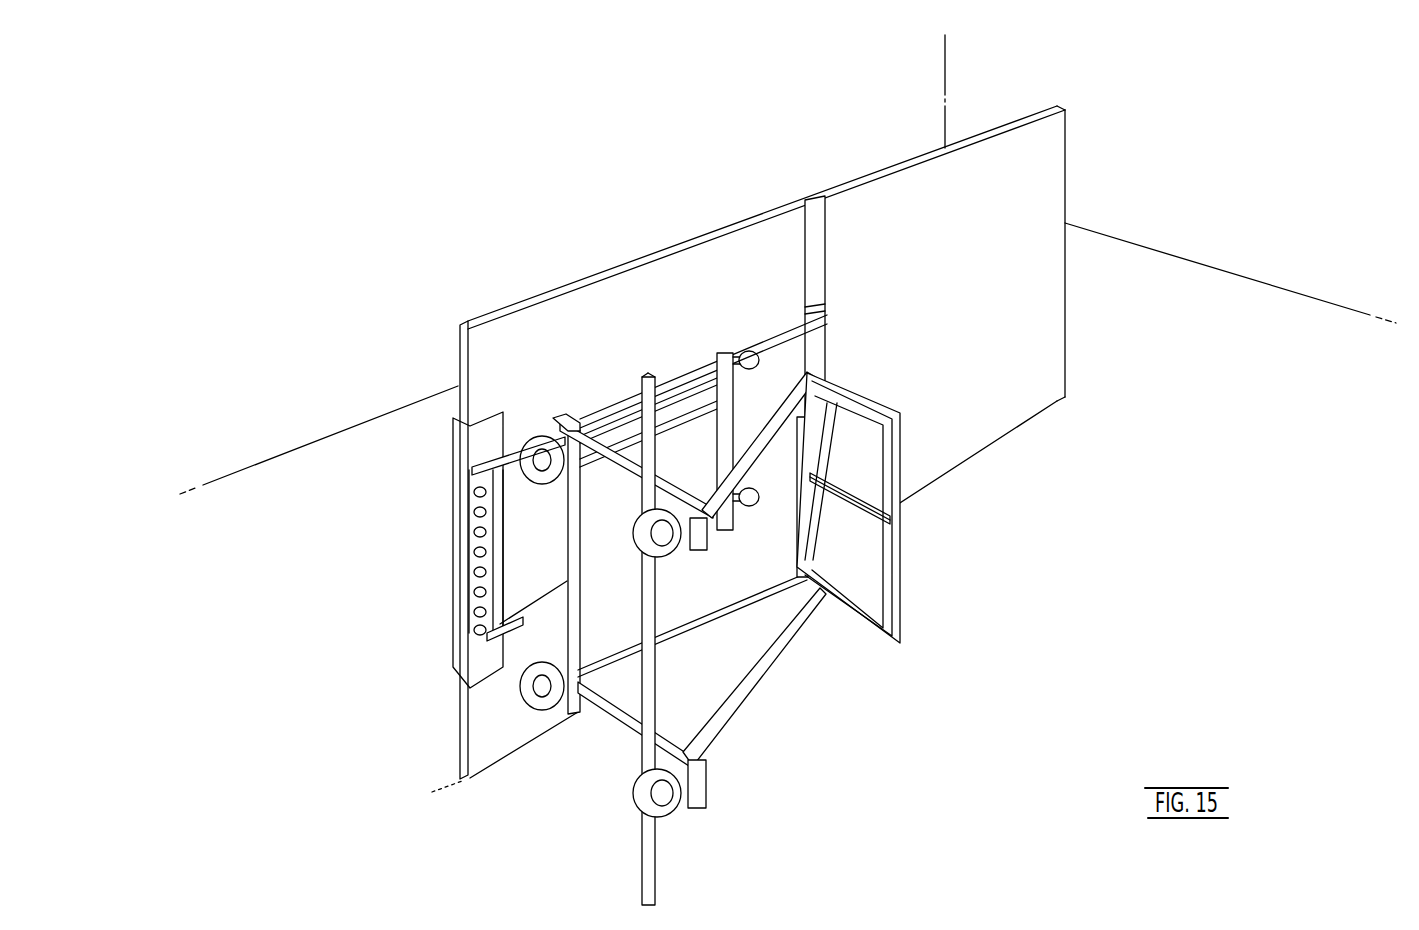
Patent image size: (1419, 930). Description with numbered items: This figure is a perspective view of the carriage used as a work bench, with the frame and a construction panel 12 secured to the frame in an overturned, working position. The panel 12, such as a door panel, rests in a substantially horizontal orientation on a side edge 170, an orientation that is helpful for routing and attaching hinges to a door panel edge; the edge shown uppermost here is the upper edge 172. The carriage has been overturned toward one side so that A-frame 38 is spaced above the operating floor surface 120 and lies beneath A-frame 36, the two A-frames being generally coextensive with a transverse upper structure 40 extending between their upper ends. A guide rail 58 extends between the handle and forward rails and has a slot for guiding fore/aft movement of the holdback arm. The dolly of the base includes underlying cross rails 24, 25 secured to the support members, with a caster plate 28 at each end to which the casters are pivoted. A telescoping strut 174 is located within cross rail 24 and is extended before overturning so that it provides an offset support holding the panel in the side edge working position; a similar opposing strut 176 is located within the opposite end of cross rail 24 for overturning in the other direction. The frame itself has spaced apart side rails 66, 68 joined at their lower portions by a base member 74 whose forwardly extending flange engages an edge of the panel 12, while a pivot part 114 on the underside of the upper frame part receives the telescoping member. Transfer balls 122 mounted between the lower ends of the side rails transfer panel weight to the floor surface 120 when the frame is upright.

The construction panel 12 is at (1003, 255).
The cross rail 24 is at (641, 775).
The cross rail 25 is at (573, 714).
The caster plate 28 is at (690, 551).
The A-frame 36 is at (680, 427).
The A-frame 38 is at (735, 673).
The transverse upper structure 40 is at (919, 518).
The guide rail 58 is at (850, 520).
The side rail 66 is at (728, 352).
The side rail 68 is at (715, 507).
The base member 74 is at (450, 648).
The pivot part 114 is at (717, 440).
The floor surface 120 is at (433, 571).
The transfer balls 122 is at (473, 500).
The side edge 170 is at (922, 492).
The upper edge 172 is at (927, 152).
The telescoping strut 174 is at (656, 888).
The opposing strut 176 is at (640, 382).